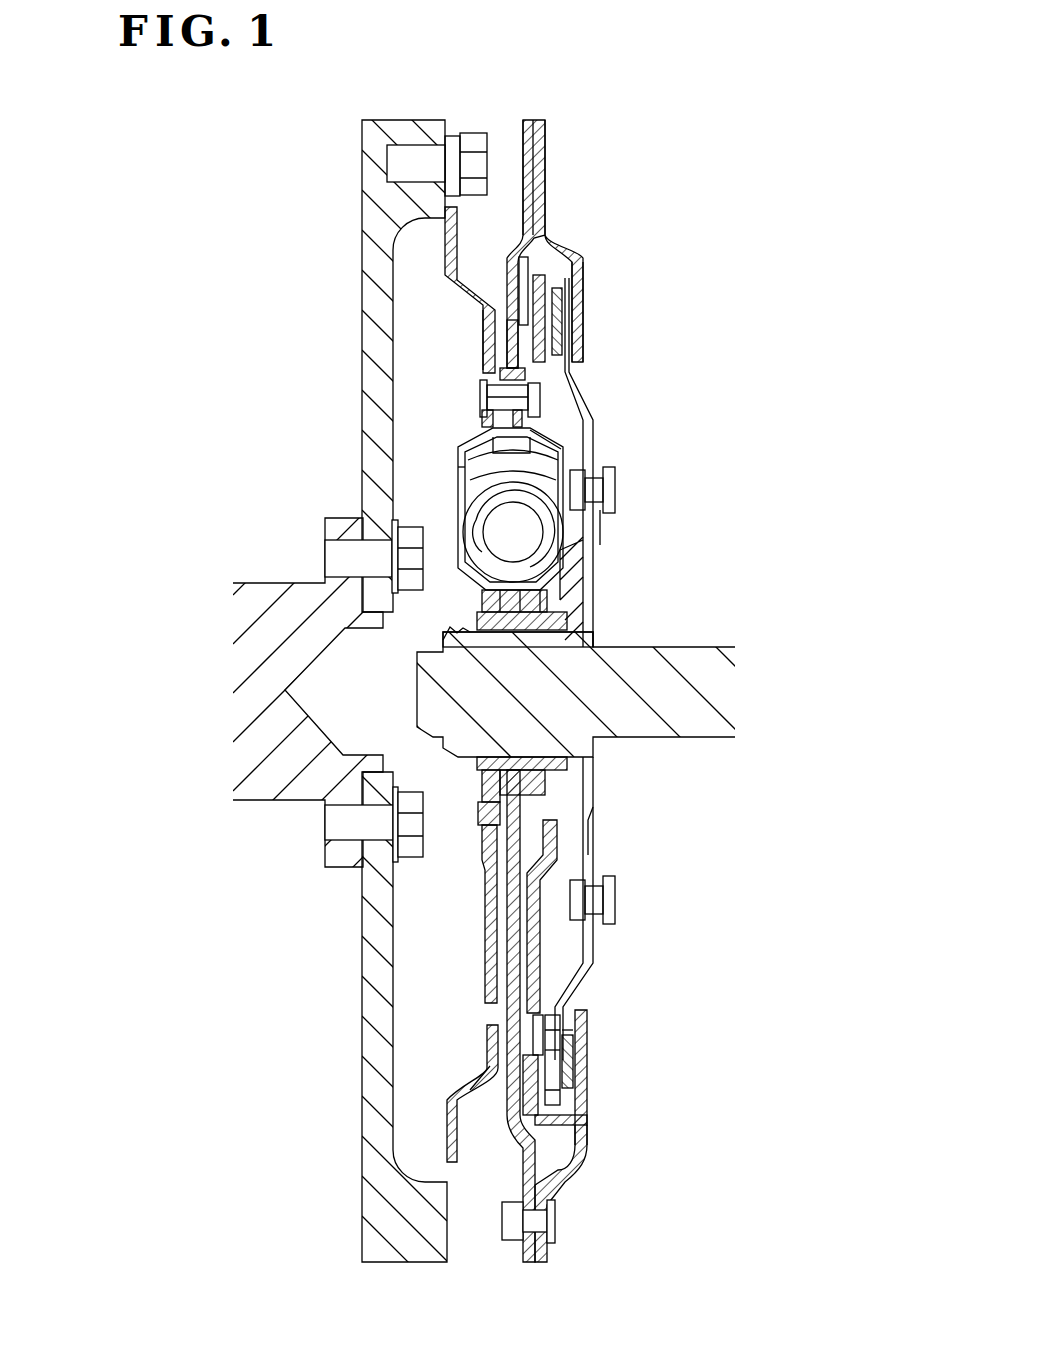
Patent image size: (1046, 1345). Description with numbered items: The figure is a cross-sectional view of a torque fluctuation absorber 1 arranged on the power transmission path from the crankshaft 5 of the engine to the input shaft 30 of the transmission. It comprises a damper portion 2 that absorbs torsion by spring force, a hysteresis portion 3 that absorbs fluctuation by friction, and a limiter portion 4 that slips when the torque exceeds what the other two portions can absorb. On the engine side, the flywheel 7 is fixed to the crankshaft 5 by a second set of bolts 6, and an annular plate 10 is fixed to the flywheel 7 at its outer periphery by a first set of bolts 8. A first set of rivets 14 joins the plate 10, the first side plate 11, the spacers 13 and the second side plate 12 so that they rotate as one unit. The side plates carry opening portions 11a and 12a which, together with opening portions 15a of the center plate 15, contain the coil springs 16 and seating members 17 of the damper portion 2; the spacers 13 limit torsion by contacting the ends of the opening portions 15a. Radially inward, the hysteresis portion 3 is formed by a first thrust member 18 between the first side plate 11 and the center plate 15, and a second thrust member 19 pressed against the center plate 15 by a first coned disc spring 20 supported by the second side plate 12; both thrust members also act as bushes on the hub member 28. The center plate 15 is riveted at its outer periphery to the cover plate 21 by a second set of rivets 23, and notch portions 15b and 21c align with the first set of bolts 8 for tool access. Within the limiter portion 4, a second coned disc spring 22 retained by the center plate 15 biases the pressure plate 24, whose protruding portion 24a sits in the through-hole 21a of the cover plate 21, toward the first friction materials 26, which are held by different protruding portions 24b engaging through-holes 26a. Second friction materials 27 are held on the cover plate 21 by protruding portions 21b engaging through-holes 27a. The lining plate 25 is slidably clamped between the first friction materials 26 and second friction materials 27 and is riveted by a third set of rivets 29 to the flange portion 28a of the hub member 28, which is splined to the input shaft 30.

The torque fluctuation absorber 1 is at (772, 230).
The damper portion 2 is at (625, 527).
The hysteresis portion 3 is at (613, 603).
The limiter portion 4 is at (615, 315).
The crankshaft 5 is at (265, 583).
The second set of bolts 6 is at (330, 545).
The flywheel 7 is at (375, 262).
The first set of bolts 8 is at (393, 158).
The plate 10 is at (445, 228).
The first side plate 11 is at (495, 437).
The opening portions 11a is at (483, 467).
The second side plate 12 is at (583, 418).
The opening portions 12a is at (548, 457).
The spacers 13 is at (503, 388).
The first set of rivets 14 is at (527, 400).
The center plate 15 is at (505, 345).
The opening portions 15a is at (480, 598).
The notch portions 15b is at (530, 125).
The coil springs 16 is at (552, 540).
The seating members 17 is at (480, 495).
The first thrust member 18 is at (445, 635).
The second thrust member 19 is at (560, 627).
The first coned disc spring 20 is at (547, 595).
The cover plate 21 is at (560, 240).
The through-hole 21a is at (582, 1135).
The protruding portions 21b is at (575, 1058).
The notch portions 21c is at (543, 163).
The second coned disc spring 22 is at (507, 272).
The second set of rivets 23 is at (537, 1222).
The pressure plate 24 is at (512, 338).
The protruding portion 24a is at (580, 1120).
The different protruding portions 24b is at (578, 1056).
The lining plate 25 is at (555, 275).
The first friction materials 26 is at (548, 310).
The through-holes 26a is at (590, 1035).
The second friction materials 27 is at (570, 332).
The through-holes 27a is at (585, 1035).
The hub member 28 is at (483, 640).
The flange portion 28a is at (603, 520).
The third set of rivets 29 is at (595, 485).
The input shaft 30 is at (705, 735).